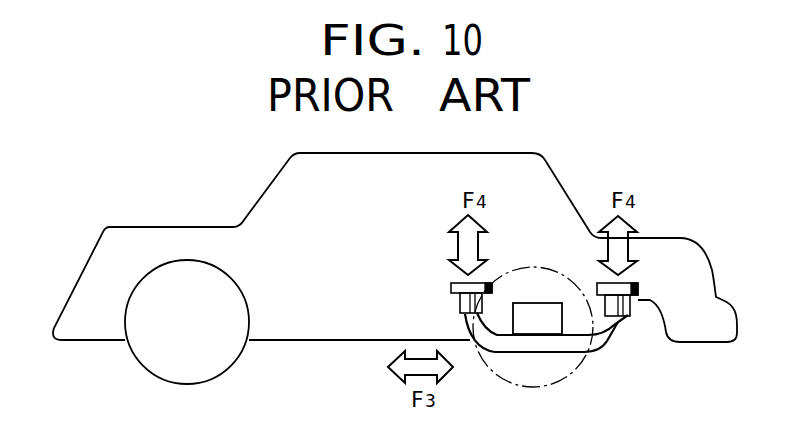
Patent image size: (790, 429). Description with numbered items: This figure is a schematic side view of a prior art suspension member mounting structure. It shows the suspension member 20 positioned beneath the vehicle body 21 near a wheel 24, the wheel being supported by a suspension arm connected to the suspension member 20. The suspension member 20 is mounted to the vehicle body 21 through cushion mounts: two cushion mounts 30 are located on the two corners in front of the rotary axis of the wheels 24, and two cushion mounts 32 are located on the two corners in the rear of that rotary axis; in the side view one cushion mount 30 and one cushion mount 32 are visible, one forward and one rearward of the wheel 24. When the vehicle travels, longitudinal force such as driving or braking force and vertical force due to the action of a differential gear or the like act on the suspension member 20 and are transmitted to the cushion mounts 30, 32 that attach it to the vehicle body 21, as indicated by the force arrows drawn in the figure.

The vehicle body 21 is at (561, 184).
The suspension member 20 is at (552, 347).
The wheel 24 is at (482, 354).
The cushion mount 30 is at (464, 300).
The cushion mount 32 is at (632, 317).